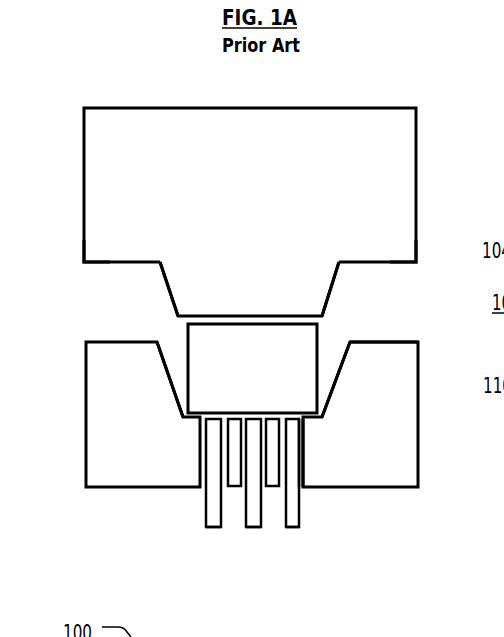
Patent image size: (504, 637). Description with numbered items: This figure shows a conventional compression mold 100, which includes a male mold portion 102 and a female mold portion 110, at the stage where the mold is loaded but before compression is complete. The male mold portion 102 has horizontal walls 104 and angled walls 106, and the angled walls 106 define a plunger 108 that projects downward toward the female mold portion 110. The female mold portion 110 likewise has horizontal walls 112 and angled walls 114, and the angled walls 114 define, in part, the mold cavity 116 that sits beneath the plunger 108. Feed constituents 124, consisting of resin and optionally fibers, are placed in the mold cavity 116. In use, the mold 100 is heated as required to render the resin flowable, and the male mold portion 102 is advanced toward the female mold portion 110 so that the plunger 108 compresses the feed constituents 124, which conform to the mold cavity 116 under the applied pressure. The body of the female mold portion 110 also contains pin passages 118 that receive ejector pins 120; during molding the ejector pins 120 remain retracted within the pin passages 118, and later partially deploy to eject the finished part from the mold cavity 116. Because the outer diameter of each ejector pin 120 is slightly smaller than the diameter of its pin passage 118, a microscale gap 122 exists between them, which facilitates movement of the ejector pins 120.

The compression mold 100 is at (150, 76).
The male mold portion 102 is at (270, 197).
The horizontal walls 104 is at (86, 264).
The angled walls 106 is at (166, 284).
The plunger 108 is at (270, 288).
The female mold portion 110 is at (147, 417).
The horizontal walls 112 is at (395, 342).
The angled walls 114 is at (335, 380).
The mold cavity 116 is at (174, 343).
The pin passages 118 is at (310, 504).
The ejector pins 120 is at (215, 529).
The microscale gap 122 is at (299, 441).
The feed constituents 124 is at (267, 375).